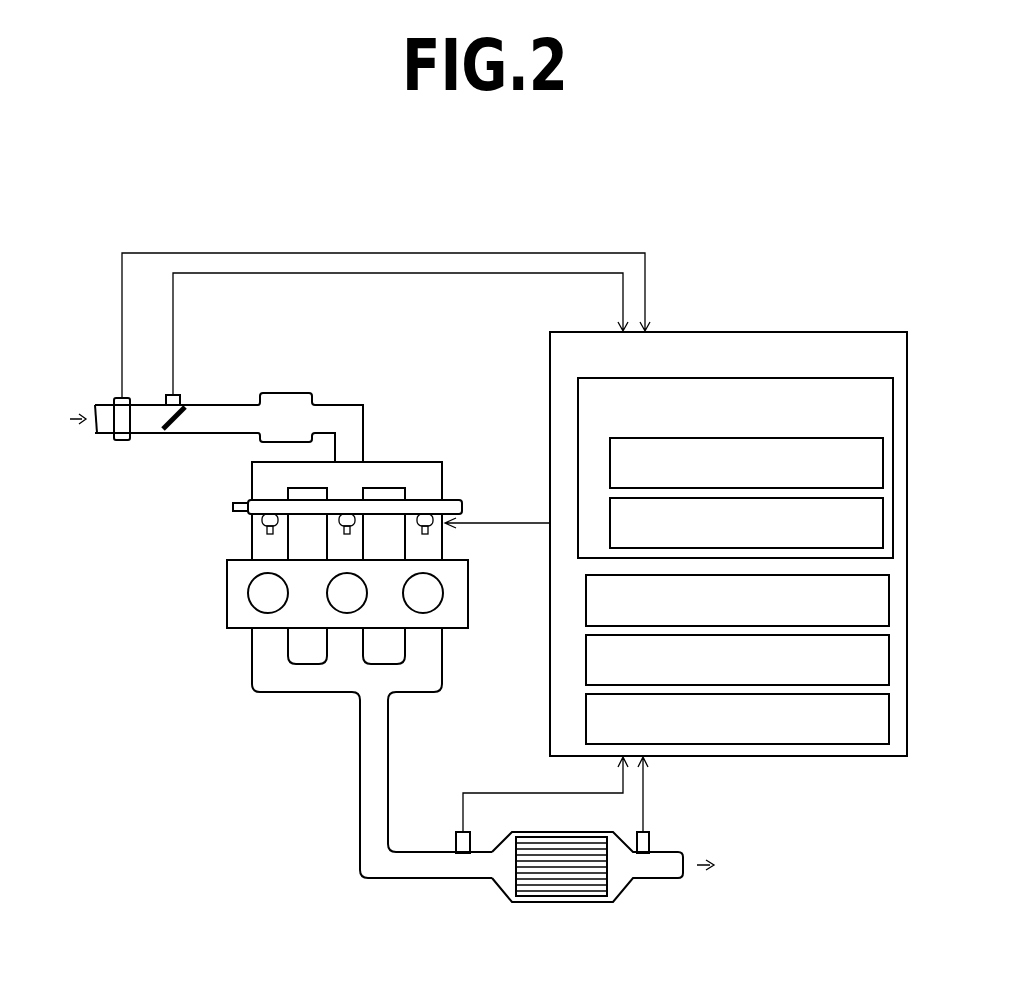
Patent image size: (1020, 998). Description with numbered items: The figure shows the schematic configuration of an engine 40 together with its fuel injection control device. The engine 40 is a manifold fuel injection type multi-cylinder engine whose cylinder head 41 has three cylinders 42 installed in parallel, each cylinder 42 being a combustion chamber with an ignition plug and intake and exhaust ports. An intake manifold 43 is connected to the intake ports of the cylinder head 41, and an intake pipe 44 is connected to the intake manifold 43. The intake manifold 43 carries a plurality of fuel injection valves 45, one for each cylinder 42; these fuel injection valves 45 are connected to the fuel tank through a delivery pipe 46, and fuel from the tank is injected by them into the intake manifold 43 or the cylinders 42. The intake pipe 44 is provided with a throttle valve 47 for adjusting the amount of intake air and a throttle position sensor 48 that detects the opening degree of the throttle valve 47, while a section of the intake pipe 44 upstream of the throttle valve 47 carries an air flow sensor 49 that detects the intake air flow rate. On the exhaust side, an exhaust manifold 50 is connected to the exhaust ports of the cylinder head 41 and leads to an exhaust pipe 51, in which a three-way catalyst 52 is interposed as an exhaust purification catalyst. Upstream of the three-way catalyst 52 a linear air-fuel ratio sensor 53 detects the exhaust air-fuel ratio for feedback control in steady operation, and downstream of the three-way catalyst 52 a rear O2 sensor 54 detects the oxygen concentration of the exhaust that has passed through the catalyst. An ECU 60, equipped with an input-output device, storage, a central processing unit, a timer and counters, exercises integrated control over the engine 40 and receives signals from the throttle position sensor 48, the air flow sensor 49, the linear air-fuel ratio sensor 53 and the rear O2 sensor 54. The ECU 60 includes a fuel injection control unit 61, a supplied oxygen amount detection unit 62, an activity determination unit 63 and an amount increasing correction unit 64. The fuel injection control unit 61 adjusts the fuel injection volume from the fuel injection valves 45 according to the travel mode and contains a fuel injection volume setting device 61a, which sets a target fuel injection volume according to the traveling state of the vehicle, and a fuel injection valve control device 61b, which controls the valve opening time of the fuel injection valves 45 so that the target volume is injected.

The engine 40 is at (455, 390).
The cylinder head 41 is at (236, 607).
The cylinder 42 is at (432, 598).
The intake manifold 43 is at (398, 478).
The intake pipe 44 is at (148, 428).
The fuel injection valve 45 is at (260, 520).
The delivery pipe 46 is at (455, 503).
The throttle valve 47 is at (169, 432).
The throttle position sensor 48 is at (182, 401).
The air flow sensor 49 is at (114, 400).
The exhaust manifold 50 is at (287, 672).
The exhaust pipe 51 is at (388, 868).
The three-way catalyst 52 is at (565, 905).
The linear air-fuel ratio sensor 53 is at (454, 834).
The rear O2 sensor 54 is at (651, 838).
The ECU 60 is at (800, 332).
The fuel injection control unit 61 is at (703, 378).
The fuel injection volume setting device 61a is at (610, 478).
The fuel injection valve control device 61b is at (610, 530).
The supplied oxygen amount detection unit 62 is at (586, 613).
The activity determination unit 63 is at (586, 672).
The amount increasing correction unit 64 is at (586, 727).